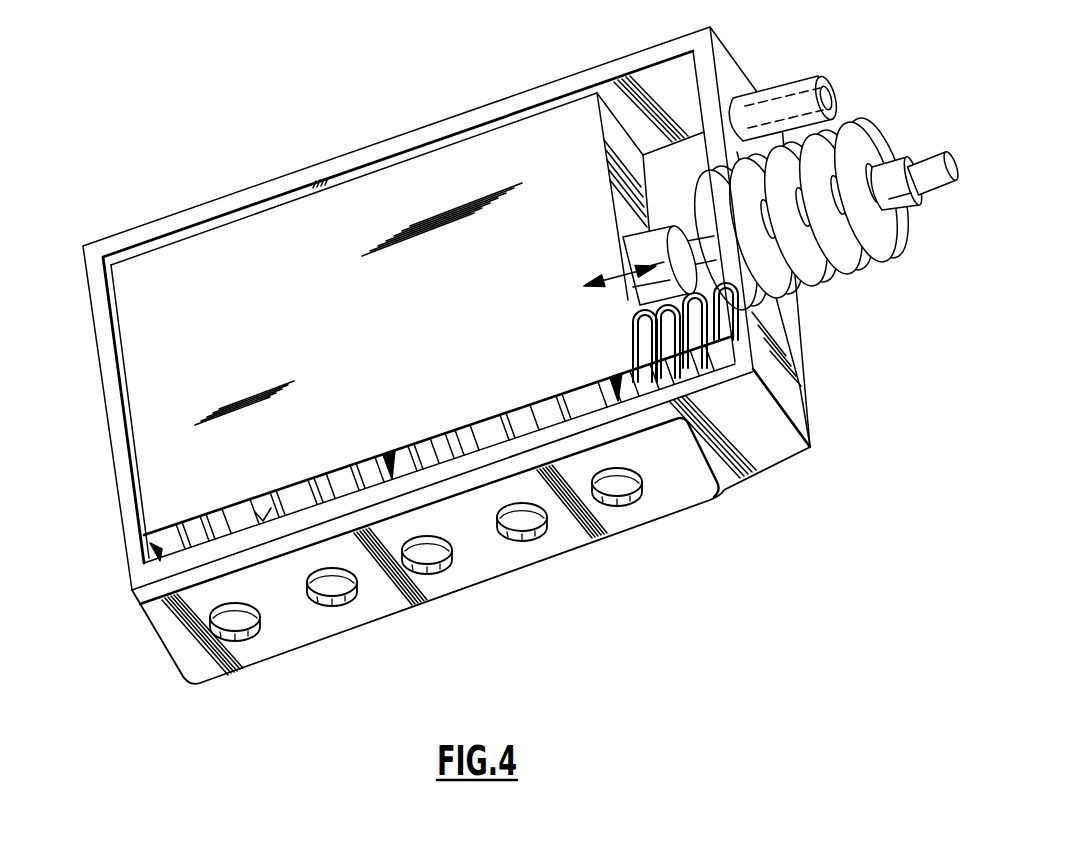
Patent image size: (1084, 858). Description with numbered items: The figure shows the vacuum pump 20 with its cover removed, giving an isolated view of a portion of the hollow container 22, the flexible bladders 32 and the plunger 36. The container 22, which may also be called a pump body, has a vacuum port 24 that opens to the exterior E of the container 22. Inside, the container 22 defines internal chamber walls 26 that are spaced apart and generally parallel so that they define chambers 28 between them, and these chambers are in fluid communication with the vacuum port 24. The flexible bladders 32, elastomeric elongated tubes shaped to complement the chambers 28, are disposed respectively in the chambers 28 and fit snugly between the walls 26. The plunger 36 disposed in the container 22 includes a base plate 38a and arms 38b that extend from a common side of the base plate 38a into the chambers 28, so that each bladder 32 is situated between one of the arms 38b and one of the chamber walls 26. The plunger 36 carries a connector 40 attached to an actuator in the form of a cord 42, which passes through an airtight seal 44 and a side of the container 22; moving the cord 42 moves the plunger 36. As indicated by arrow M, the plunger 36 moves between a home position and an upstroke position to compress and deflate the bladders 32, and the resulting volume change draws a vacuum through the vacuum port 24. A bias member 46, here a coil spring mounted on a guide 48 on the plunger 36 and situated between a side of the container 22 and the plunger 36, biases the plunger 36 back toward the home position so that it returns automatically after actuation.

The vacuum pump 20 is at (125, 698).
The hollow container 22 is at (787, 437).
The vacuum port 24 is at (797, 88).
The internal chamber walls 26 is at (620, 392).
The chambers 28 is at (464, 462).
The flexible bladders 32 is at (623, 480).
The plunger 36 is at (168, 493).
The base plate 38a is at (253, 240).
The arms 38b is at (265, 515).
The connector 40 is at (670, 235).
The cord 42 is at (930, 162).
The airtight seal 44 is at (903, 232).
The bias member 46 is at (672, 350).
The guide 48 is at (677, 350).
The exterior E is at (862, 98).
The arrow M is at (613, 265).